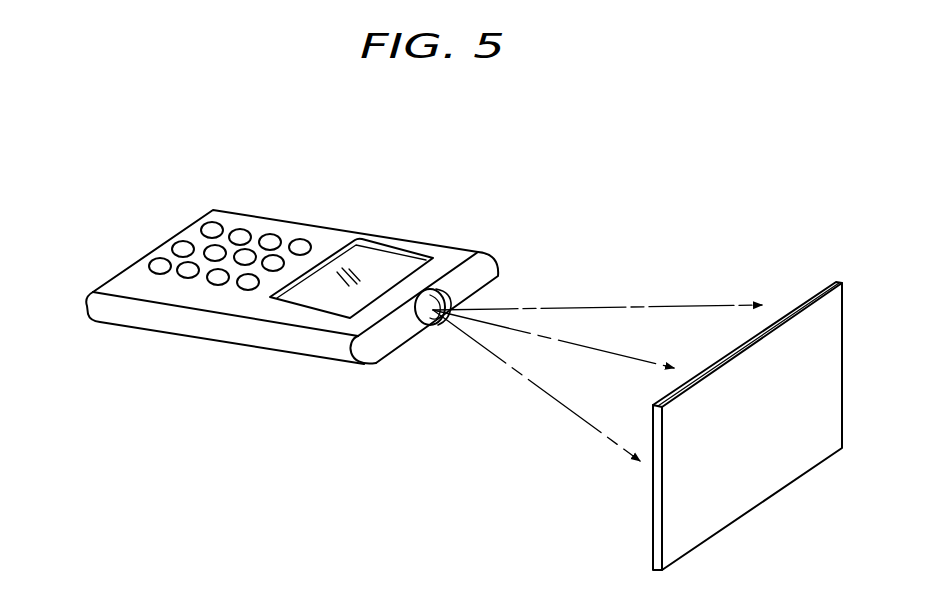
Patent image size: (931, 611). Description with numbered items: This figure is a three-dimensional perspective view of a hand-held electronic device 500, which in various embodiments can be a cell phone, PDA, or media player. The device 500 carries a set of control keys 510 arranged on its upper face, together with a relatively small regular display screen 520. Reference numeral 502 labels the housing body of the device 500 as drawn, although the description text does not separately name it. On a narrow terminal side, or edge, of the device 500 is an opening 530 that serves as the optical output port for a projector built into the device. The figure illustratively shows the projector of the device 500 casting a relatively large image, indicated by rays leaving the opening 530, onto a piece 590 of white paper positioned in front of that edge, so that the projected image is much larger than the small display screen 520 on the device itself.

The hand-held electronic device 500 is at (96, 206).
The housing 502 is at (377, 345).
The control keys 510 is at (228, 200).
The regular display screen 520 is at (382, 260).
The opening 530 is at (428, 322).
The piece of white paper 590 is at (735, 495).